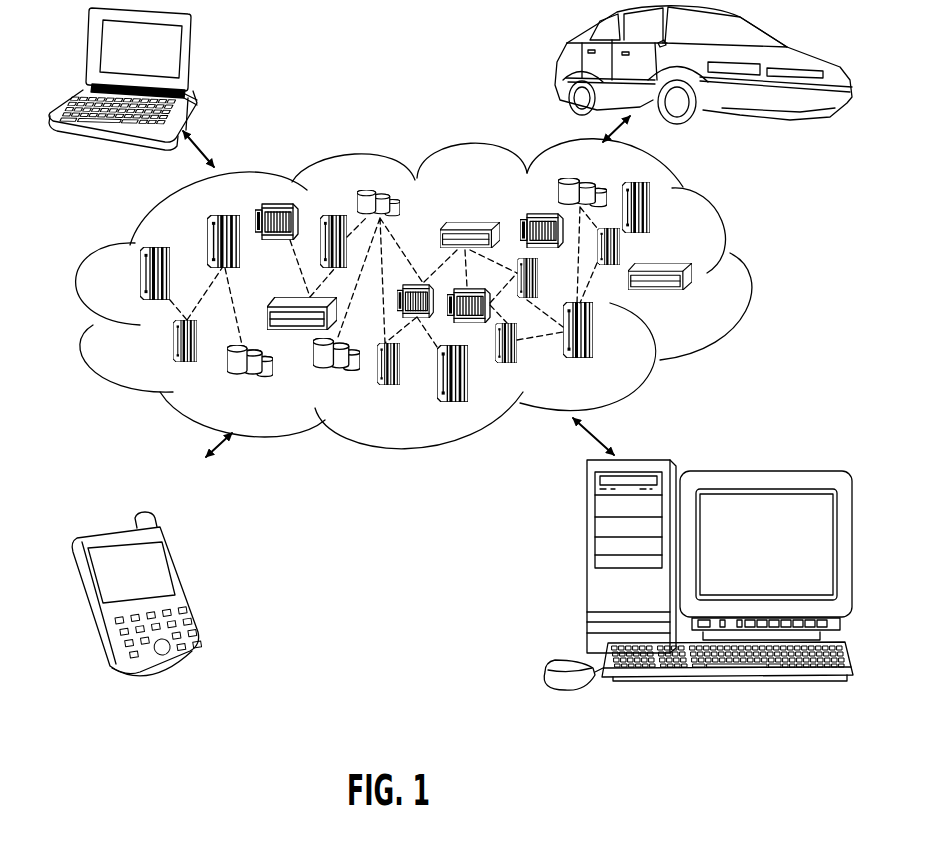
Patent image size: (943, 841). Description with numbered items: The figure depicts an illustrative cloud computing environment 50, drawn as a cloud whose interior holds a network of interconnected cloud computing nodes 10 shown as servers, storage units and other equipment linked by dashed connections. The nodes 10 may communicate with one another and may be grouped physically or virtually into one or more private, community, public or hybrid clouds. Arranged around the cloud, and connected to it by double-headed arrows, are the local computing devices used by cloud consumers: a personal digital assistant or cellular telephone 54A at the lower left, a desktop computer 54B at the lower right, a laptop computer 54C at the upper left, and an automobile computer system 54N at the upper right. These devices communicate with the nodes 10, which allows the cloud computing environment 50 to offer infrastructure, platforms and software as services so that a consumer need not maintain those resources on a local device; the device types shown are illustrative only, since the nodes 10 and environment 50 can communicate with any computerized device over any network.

The cloud computing nodes 10 is at (718, 299).
The cloud computing environment 50 is at (737, 238).
The personal digital assistant (PDA) or cellular telephone 54A is at (185, 583).
The desktop computer 54B is at (585, 565).
The laptop computer 54C is at (192, 50).
The automobile computer system 54N is at (560, 60).